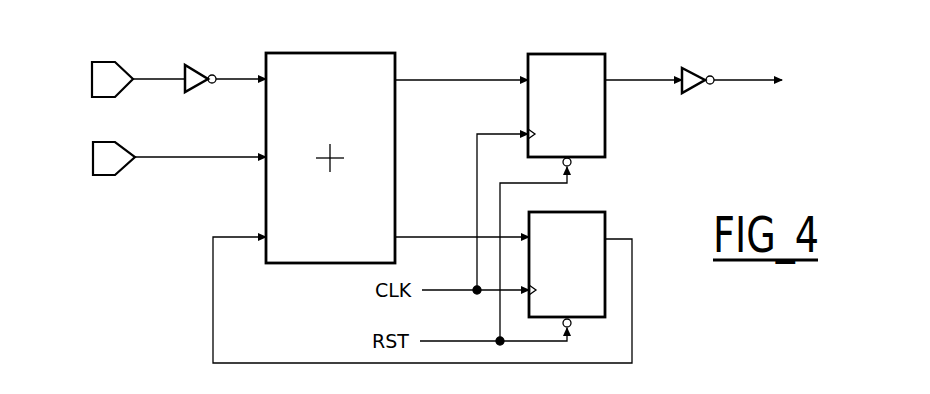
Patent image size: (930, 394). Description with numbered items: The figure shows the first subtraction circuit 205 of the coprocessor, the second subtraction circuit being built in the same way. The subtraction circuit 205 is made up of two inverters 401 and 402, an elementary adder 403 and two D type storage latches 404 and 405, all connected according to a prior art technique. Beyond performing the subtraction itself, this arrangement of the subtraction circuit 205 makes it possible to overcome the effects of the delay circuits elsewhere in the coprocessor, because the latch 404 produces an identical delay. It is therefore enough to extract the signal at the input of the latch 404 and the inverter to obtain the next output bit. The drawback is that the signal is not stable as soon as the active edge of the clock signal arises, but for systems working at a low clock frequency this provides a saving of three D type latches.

The first subtraction circuit 205 is at (175, 207).
The inverter 401 is at (197, 62).
The inverter 402 is at (695, 68).
The full adder 403 is at (338, 53).
The D type storage latch 404 is at (605, 114).
The D type storage latch 405 is at (605, 214).